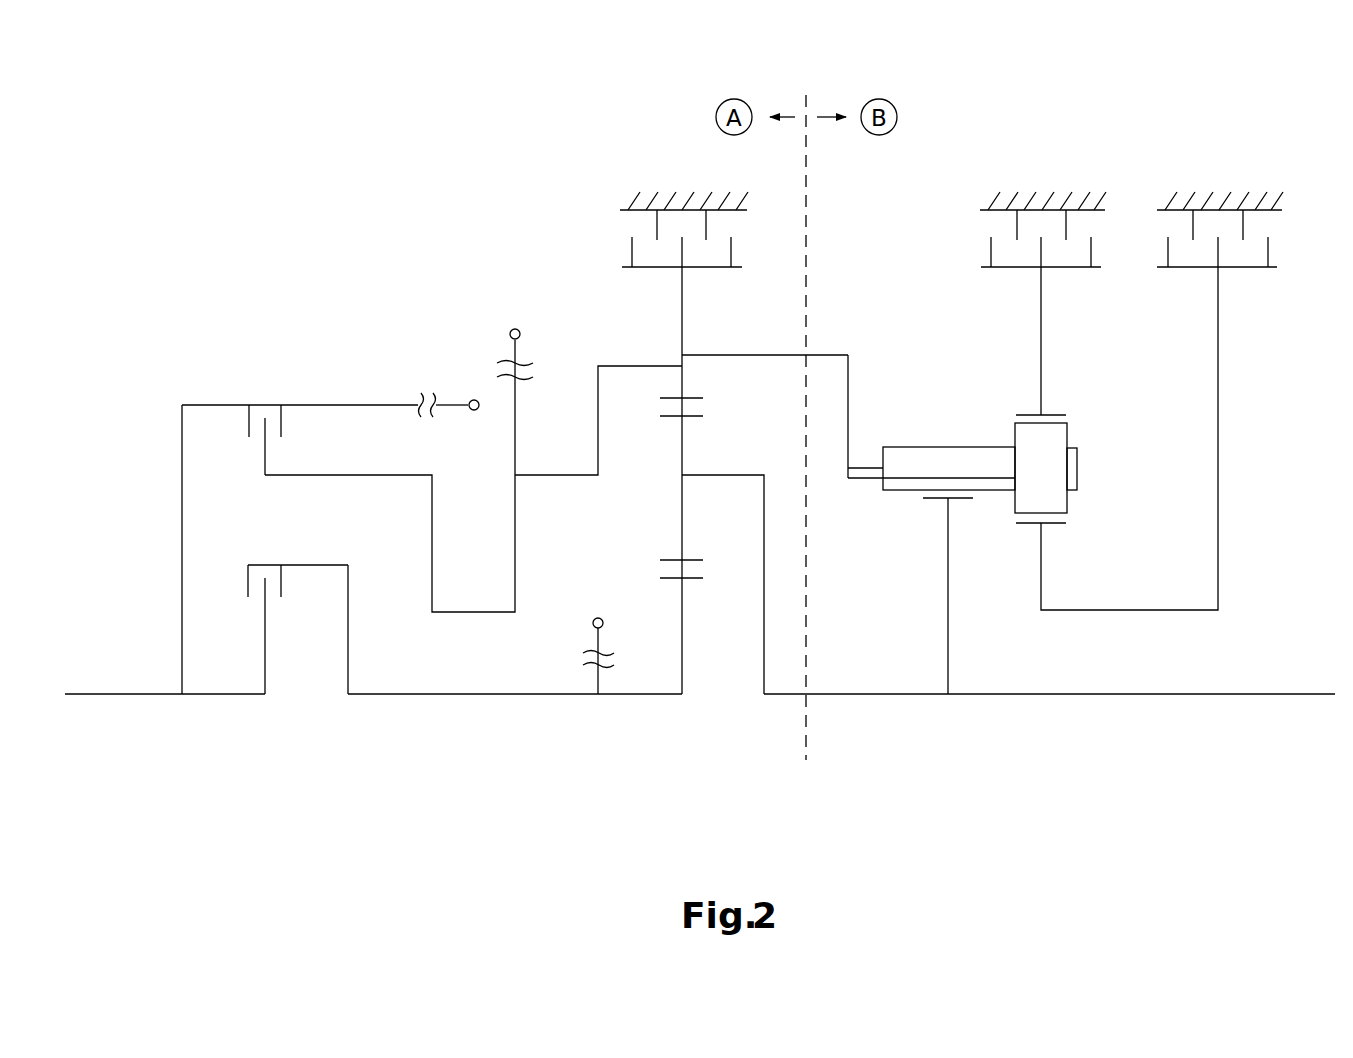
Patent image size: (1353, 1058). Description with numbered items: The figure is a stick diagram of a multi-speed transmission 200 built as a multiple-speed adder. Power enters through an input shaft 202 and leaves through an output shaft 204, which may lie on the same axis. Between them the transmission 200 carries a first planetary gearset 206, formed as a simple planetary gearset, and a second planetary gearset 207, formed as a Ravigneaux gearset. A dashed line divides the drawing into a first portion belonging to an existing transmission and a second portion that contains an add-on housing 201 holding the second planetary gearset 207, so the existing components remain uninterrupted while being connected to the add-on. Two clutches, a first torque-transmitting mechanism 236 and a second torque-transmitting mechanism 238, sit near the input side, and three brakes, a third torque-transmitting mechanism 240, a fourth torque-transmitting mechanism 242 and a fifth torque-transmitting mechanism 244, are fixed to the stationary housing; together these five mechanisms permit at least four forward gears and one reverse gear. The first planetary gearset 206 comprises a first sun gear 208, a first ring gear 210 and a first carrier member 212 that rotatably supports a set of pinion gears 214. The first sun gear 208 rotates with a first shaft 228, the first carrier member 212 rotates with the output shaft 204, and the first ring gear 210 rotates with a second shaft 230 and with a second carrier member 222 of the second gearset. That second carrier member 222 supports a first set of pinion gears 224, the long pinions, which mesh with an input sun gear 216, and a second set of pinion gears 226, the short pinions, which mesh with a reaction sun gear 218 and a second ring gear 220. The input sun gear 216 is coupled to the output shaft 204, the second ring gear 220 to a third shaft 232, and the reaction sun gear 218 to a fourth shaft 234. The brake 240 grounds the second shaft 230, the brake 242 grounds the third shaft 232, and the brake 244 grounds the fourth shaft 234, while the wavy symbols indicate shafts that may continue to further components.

The multi-speed transmission 200 is at (223, 212).
The add-on housing 201 is at (954, 130).
The input shaft 202 is at (119, 694).
The output shaft 204 is at (1272, 694).
The first planetary gearset 206 is at (682, 745).
The second planetary gearset 207 is at (1060, 750).
The first sun gear 208 is at (700, 578).
The first ring gear 210 is at (700, 398).
The first carrier member 212 is at (670, 483).
The set of pinion gears 214 is at (700, 560).
The input sun gear 216 is at (960, 500).
The reaction sun gear 218 is at (1057, 523).
The second ring gear 220 is at (1058, 413).
The second carrier member 222 is at (935, 438).
The first set of pinion gears 224 is at (899, 490).
The second set of pinion gears 226 is at (1072, 500).
The first shaft 228 is at (506, 694).
The second shaft 230 is at (357, 475).
The third shaft 232 is at (1041, 315).
The fourth shaft 234 is at (1218, 440).
The first torque-transmitting mechanism 236 is at (248, 581).
The second torque-transmitting mechanism 238 is at (249, 418).
The third torque-transmitting mechanism 240 is at (605, 230).
The fourth torque-transmitting mechanism 242 is at (965, 230).
The fifth torque-transmitting mechanism 244 is at (1292, 237).